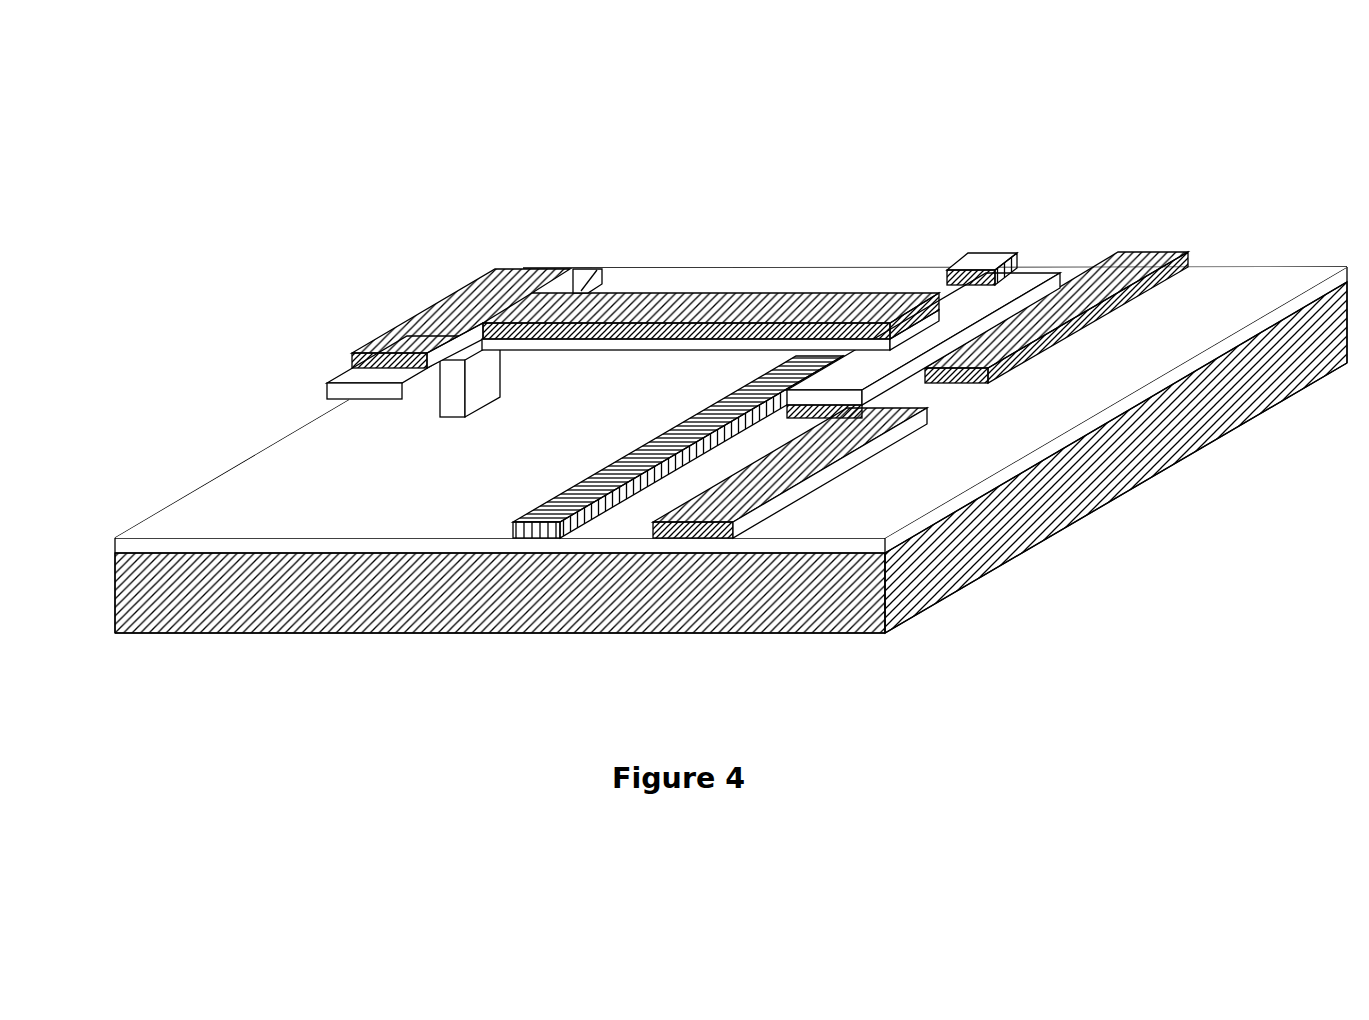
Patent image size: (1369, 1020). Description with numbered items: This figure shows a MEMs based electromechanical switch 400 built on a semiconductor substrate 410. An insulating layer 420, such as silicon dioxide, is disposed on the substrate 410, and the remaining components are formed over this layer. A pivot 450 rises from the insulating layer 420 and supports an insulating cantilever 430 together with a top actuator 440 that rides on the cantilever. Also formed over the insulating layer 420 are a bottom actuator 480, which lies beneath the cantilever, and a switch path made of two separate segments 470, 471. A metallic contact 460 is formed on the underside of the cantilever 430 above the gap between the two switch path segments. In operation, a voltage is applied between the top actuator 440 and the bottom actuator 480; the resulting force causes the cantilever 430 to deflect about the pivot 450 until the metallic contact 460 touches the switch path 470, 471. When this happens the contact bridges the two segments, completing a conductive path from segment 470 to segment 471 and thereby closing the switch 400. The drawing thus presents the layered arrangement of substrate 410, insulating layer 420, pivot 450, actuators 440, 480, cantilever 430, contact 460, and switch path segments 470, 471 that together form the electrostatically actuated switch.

The MEMs based electromechanical switch 400 is at (686, 364).
The semiconductor substrate 410 is at (686, 450).
The insulating layer 420 is at (731, 410).
The insulating cantilever 430 is at (691, 304).
The top actuator 440 is at (645, 318).
The pivot 450 is at (510, 386).
The metallic contact 460 is at (923, 349).
The switch path segment 470 is at (1087, 296).
The switch path segment 471 is at (790, 473).
The bottom actuator 480 is at (651, 447).